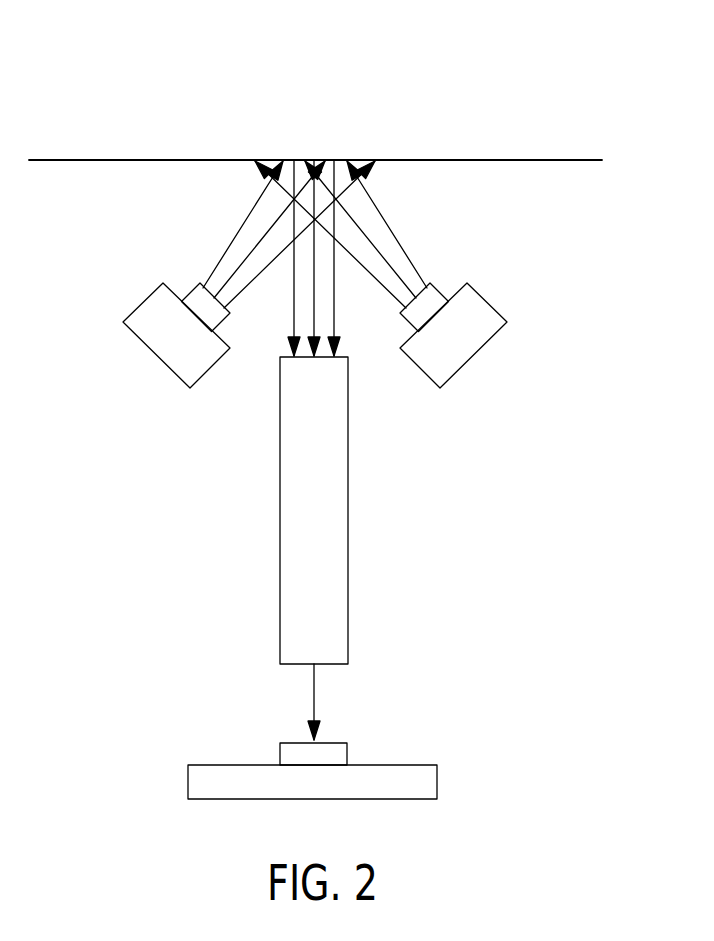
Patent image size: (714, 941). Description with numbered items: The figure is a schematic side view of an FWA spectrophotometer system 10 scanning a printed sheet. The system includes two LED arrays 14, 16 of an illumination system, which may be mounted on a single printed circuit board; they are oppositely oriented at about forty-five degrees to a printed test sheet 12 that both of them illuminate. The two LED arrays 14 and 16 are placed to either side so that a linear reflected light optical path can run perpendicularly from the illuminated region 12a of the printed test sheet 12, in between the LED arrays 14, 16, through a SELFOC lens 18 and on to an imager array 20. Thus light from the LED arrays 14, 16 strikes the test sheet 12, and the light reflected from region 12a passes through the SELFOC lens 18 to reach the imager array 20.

The FWA spectrophotometer system 10 is at (192, 103).
The printed test sheet 12 is at (457, 160).
The illuminated region of the printed test sheet 12a is at (378, 176).
The LED array 14 is at (153, 352).
The LED array 16 is at (478, 350).
The SELFOC lens 18 is at (348, 507).
The imager array 20 is at (345, 743).